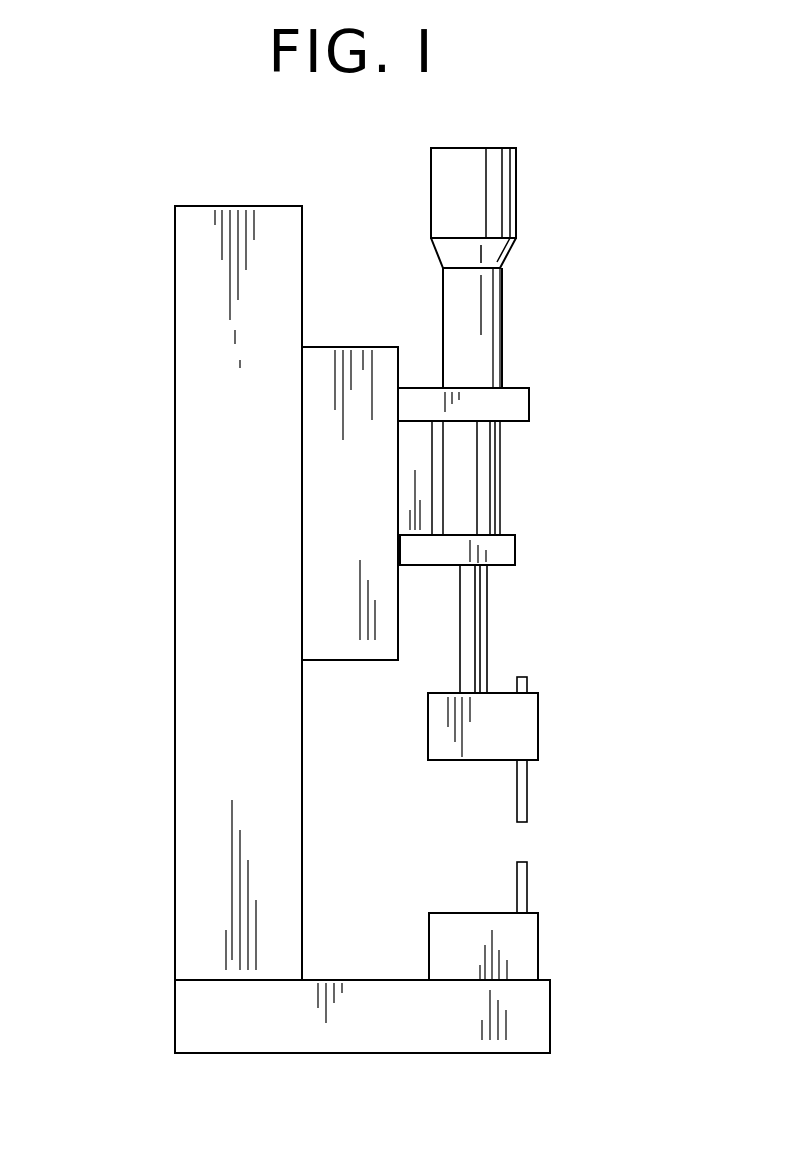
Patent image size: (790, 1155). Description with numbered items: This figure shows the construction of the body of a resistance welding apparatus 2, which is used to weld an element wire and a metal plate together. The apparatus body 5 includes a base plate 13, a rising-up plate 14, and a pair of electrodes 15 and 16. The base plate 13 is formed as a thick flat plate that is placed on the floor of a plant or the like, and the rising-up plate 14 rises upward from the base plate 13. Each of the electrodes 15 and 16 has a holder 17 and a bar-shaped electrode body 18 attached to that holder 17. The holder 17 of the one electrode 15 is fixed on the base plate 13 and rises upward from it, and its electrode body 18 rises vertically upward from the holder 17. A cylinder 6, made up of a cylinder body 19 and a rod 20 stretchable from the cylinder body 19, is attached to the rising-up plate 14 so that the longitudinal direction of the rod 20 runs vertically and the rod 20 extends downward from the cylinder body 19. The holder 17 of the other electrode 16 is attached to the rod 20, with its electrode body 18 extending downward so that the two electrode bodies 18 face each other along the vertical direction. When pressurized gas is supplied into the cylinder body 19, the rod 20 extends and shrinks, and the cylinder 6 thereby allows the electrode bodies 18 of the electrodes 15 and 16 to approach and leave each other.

The resistance welding apparatus 2 is at (608, 272).
The apparatus body 5 is at (173, 376).
The cylinder 6 is at (507, 342).
The base plate 13 is at (362, 1030).
The rising-up plate 14 is at (191, 761).
The electrode 15 is at (538, 921).
The electrode 16 is at (537, 749).
The holder 17 is at (525, 702).
The electrode body 18 is at (527, 787).
The cylinder body 19 is at (472, 479).
The rod 20 is at (472, 628).